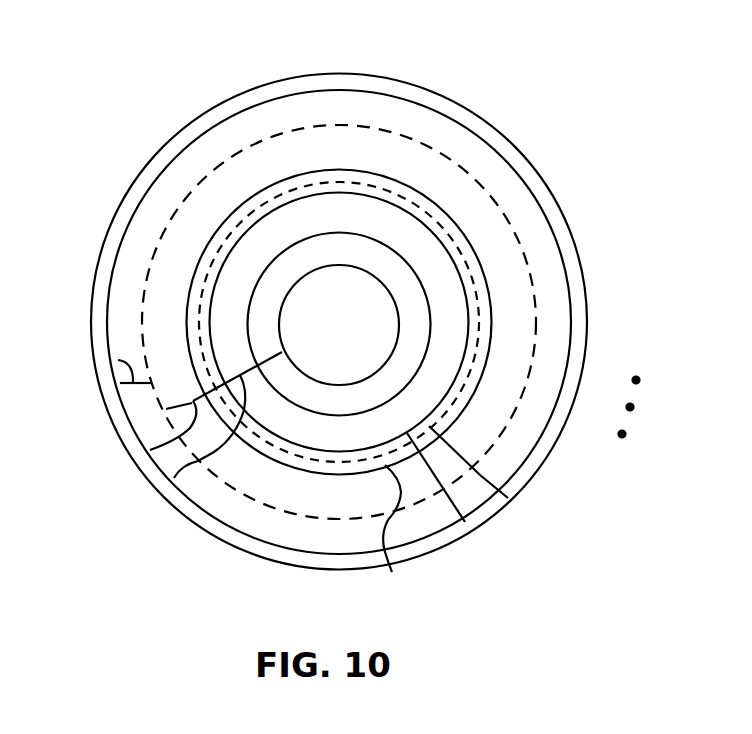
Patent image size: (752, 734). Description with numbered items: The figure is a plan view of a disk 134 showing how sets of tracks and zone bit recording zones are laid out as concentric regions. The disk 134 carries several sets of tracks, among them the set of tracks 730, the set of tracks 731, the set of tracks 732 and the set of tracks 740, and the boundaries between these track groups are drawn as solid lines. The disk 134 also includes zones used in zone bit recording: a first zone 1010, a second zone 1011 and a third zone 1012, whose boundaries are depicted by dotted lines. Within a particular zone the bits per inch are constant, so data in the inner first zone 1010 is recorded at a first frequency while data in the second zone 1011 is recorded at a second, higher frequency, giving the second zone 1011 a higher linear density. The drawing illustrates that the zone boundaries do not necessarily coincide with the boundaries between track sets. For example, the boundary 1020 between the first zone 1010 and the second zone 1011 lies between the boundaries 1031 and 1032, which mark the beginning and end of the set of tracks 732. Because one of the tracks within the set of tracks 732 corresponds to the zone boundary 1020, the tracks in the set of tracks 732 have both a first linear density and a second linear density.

The disk 134 is at (162, 80).
The set of tracks 730 is at (410, 277).
The set of tracks 731 is at (450, 290).
The set of tracks 732 is at (490, 320).
The set of tracks 740 is at (558, 425).
The first zone 1010 is at (174, 478).
The second zone 1011 is at (150, 450).
The third zone 1012 is at (118, 360).
The boundary between zones 1020 is at (508, 498).
The boundary of track set 1031 is at (465, 522).
The boundary of track set 1032 is at (392, 572).